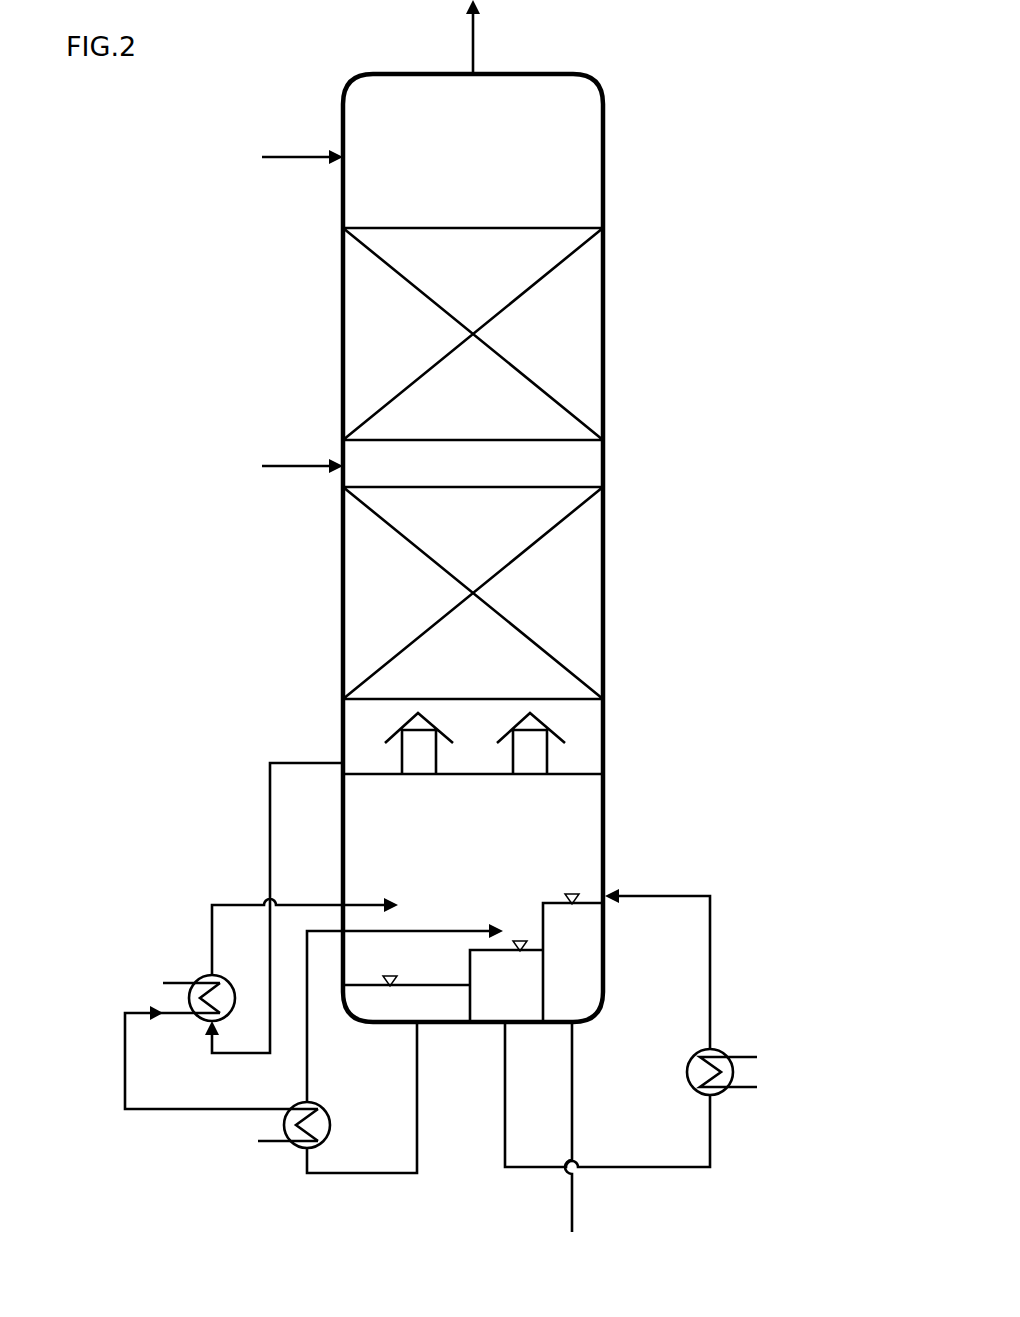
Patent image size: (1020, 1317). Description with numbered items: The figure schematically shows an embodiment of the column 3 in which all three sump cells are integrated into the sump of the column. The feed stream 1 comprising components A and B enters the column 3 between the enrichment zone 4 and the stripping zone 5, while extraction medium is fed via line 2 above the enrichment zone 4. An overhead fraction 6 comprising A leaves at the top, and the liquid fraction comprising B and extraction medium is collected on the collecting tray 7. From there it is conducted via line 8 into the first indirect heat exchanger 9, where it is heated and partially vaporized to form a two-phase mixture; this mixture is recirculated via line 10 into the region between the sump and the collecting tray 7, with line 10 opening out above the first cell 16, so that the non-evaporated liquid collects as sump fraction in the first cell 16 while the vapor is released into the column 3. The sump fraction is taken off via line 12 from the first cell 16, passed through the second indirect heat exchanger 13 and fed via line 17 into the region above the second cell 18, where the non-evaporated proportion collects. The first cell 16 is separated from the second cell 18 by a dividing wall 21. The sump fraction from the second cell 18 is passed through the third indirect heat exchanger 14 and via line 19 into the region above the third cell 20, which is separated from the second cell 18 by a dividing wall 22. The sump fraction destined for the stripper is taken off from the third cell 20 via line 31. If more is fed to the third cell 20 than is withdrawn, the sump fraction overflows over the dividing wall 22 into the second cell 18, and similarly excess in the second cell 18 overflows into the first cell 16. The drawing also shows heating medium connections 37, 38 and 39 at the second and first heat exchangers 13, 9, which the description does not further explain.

The feed stream 1 is at (302, 462).
The line 2 is at (302, 152).
The column 3 is at (605, 150).
The enrichment zone 4 is at (580, 412).
The stripping zone 5 is at (580, 672).
The overhead fraction 6 is at (473, 44).
The collecting tray 7 is at (580, 772).
The line 8 is at (310, 758).
The first indirect heat exchanger 9 is at (200, 975).
The line 10 is at (233, 903).
The line 12 is at (418, 1108).
The second indirect heat exchanger 13 is at (332, 1128).
The third indirect heat exchanger 14 is at (722, 1052).
The first cell 16 is at (370, 1003).
The line 17 is at (415, 930).
The second cell 18 is at (495, 1010).
The line 19 is at (665, 895).
The third cell 20 is at (585, 956).
The dividing wall 21 is at (470, 963).
The dividing wall 22 is at (543, 912).
The line 31 is at (572, 1200).
The heating medium line 37 is at (270, 1146).
The heating medium line 38 is at (145, 1016).
The heating medium outlet line 39 is at (163, 983).